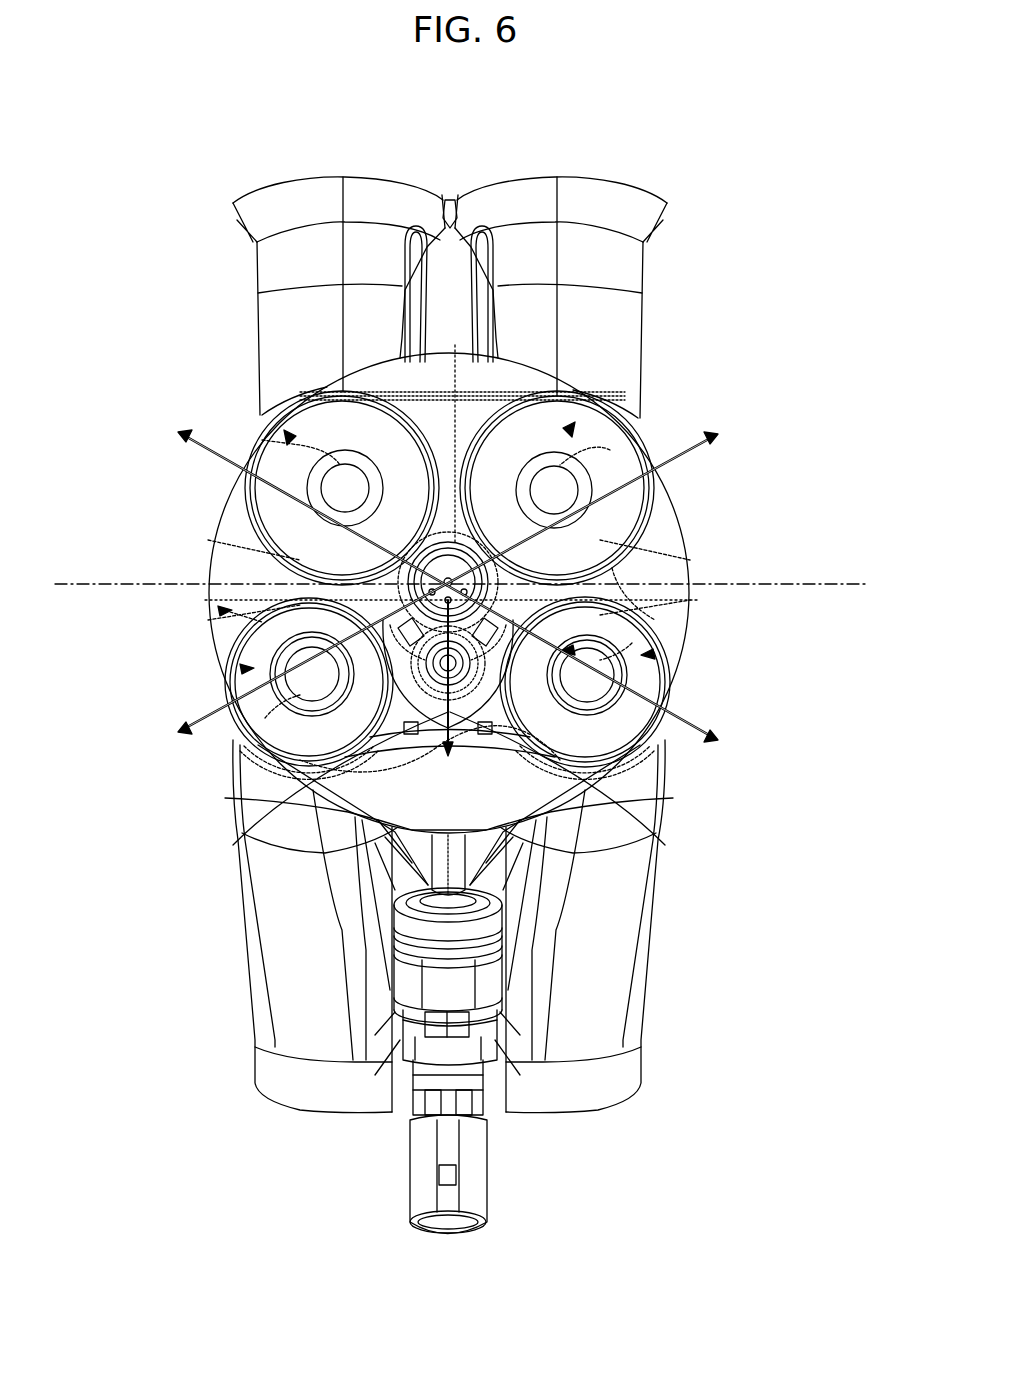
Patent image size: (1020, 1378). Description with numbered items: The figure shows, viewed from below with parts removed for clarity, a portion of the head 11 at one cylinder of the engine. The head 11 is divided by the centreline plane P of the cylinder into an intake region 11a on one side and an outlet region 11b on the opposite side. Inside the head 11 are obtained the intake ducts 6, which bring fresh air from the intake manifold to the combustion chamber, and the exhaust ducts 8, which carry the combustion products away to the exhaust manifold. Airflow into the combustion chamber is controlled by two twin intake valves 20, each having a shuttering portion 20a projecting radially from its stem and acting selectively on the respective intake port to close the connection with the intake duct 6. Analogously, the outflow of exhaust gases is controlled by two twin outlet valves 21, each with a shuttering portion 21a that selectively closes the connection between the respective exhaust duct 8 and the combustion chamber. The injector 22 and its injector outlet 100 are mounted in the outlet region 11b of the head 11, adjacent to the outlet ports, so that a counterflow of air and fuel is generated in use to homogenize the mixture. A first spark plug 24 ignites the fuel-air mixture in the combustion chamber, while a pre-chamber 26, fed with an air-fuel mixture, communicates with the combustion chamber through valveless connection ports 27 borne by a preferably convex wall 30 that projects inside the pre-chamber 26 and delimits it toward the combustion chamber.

The injector outlet 100 is at (657, 838).
The intake duct 6 is at (373, 177).
The exhaust duct 8 is at (330, 1114).
The head 11 is at (268, 551).
The intake region 11a is at (688, 553).
The outlet region 11b is at (205, 615).
The intake valve 20 is at (262, 408).
The shuttering portion 20a is at (262, 440).
The outlet valve 21 is at (245, 675).
The shuttering portion 21a is at (265, 718).
The injector 22 is at (508, 957).
The first spark plug 24 is at (262, 800).
The pre-chamber 26 is at (612, 568).
The connection ports 27 is at (220, 612).
The wall 30 is at (458, 420).
The centreline plane P is at (855, 583).